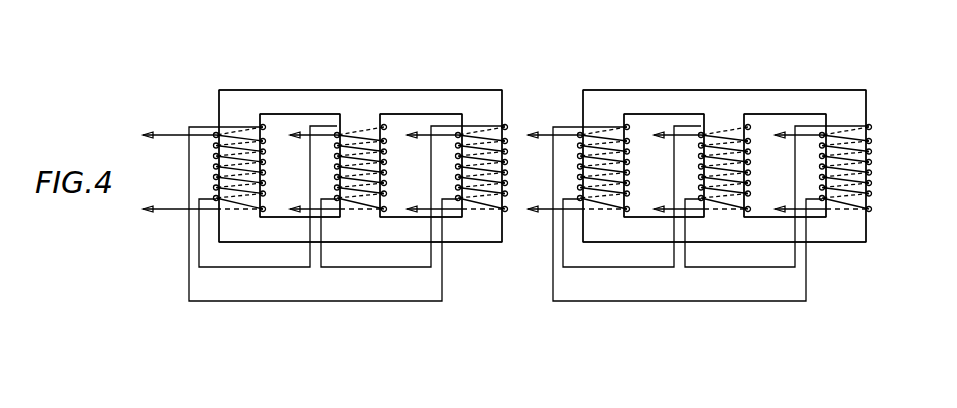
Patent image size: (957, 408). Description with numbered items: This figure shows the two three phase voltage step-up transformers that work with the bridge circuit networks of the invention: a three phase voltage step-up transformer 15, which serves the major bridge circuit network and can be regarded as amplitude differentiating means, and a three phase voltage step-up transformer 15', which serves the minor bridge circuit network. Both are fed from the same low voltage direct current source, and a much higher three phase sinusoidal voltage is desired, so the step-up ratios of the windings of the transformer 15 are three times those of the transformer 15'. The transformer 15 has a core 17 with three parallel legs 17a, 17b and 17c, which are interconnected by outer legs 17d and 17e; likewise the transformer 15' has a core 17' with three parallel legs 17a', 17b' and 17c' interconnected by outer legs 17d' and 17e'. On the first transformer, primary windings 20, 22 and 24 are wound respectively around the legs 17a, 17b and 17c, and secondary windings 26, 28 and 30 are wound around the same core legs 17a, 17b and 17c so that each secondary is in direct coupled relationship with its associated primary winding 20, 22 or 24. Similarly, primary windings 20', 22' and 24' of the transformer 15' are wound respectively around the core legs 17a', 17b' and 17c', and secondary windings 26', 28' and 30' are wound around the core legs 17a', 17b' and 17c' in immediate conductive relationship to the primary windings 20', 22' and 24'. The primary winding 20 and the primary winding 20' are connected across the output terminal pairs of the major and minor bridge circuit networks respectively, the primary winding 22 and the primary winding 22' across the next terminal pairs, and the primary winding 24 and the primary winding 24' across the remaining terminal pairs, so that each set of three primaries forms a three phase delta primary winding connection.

The three phase voltage step-up transformer 15 is at (324, 170).
The core 17 is at (360, 144).
The leg 17a is at (214, 166).
The leg 17b is at (388, 138).
The leg 17c is at (506, 159).
The outer leg 17d is at (363, 81).
The outer leg 17e is at (360, 260).
The primary winding 20 is at (259, 168).
The primary winding 22 is at (381, 168).
The primary winding 24 is at (500, 168).
The secondary winding 26 is at (203, 193).
The secondary winding 28 is at (332, 172).
The secondary winding 30 is at (452, 172).
The three phase voltage step-up transformer 15' is at (698, 170).
The core 17' is at (724, 144).
The core leg 17a' is at (579, 166).
The core leg 17b' is at (756, 138).
The core leg 17c' is at (882, 159).
The outer leg 17d' is at (728, 80).
The outer leg 17e' is at (724, 260).
The primary winding 20' is at (626, 168).
The primary winding 22' is at (748, 168).
The primary winding 24' is at (868, 168).
The secondary winding 26' is at (573, 223).
The secondary winding 28' is at (695, 172).
The secondary winding 30' is at (816, 172).